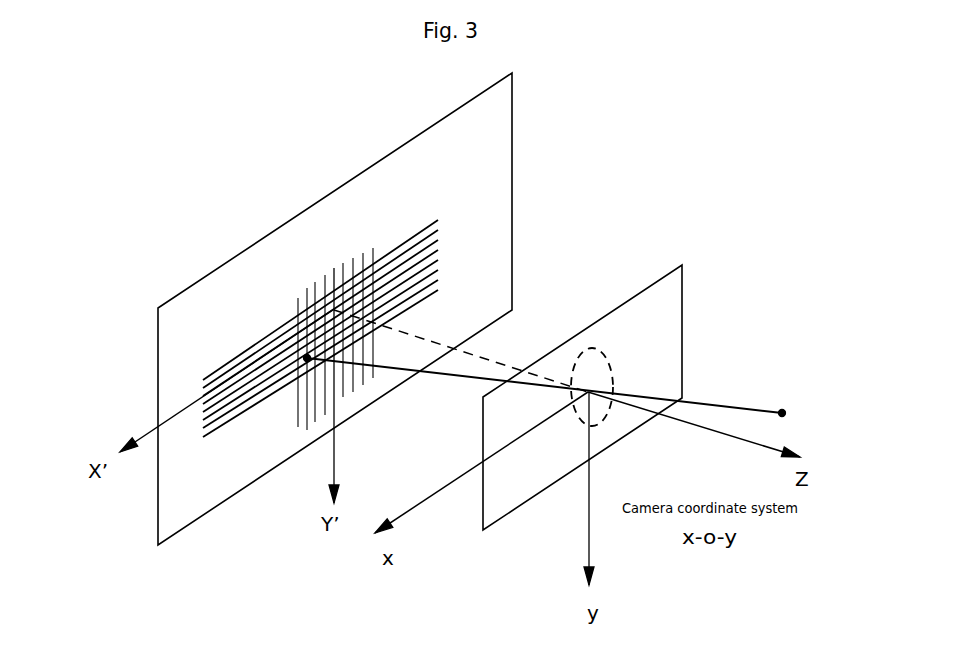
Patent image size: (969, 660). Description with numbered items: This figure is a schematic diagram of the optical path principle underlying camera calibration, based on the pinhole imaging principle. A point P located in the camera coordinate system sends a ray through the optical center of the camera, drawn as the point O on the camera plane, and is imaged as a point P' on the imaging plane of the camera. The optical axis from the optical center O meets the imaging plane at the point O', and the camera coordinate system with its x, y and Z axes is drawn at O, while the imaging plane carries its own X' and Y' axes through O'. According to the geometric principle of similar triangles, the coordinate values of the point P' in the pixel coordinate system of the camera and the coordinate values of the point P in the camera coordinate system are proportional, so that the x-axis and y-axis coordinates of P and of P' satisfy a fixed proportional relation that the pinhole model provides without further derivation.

The optical center O is at (612, 394).
The principal point on imaging plane O' is at (448, 351).
The point P in the camera coordinate system P is at (556, 392).
The point P' imaged on the imaging plane P' is at (300, 377).